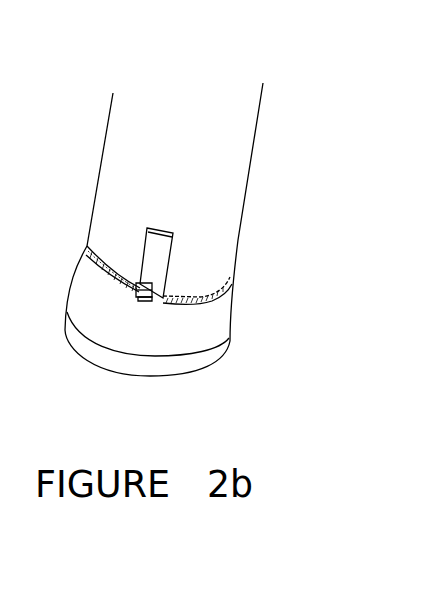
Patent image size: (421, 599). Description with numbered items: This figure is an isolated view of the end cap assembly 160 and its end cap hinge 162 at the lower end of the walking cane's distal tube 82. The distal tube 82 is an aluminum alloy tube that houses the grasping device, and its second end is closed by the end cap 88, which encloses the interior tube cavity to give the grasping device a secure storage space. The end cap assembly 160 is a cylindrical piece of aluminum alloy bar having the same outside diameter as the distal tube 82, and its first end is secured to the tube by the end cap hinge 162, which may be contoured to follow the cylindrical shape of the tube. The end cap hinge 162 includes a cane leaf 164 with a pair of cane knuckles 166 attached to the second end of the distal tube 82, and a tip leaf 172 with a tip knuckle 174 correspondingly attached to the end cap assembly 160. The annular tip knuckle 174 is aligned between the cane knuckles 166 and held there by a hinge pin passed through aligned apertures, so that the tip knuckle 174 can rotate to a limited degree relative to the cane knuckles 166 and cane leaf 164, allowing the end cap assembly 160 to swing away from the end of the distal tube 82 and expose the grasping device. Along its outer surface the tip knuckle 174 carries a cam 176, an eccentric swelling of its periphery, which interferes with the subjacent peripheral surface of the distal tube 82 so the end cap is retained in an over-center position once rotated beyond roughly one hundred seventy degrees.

The distal tube 82 is at (242, 112).
The end cap 88 is at (95, 357).
The end cap assembly 160 is at (248, 348).
The end cap hinge 162 is at (173, 243).
The cane leaf 164 is at (162, 265).
The cane knuckles 166 is at (190, 304).
The tip leaf 172 is at (136, 295).
The tip knuckle 174 is at (136, 291).
The cam 176 is at (95, 262).